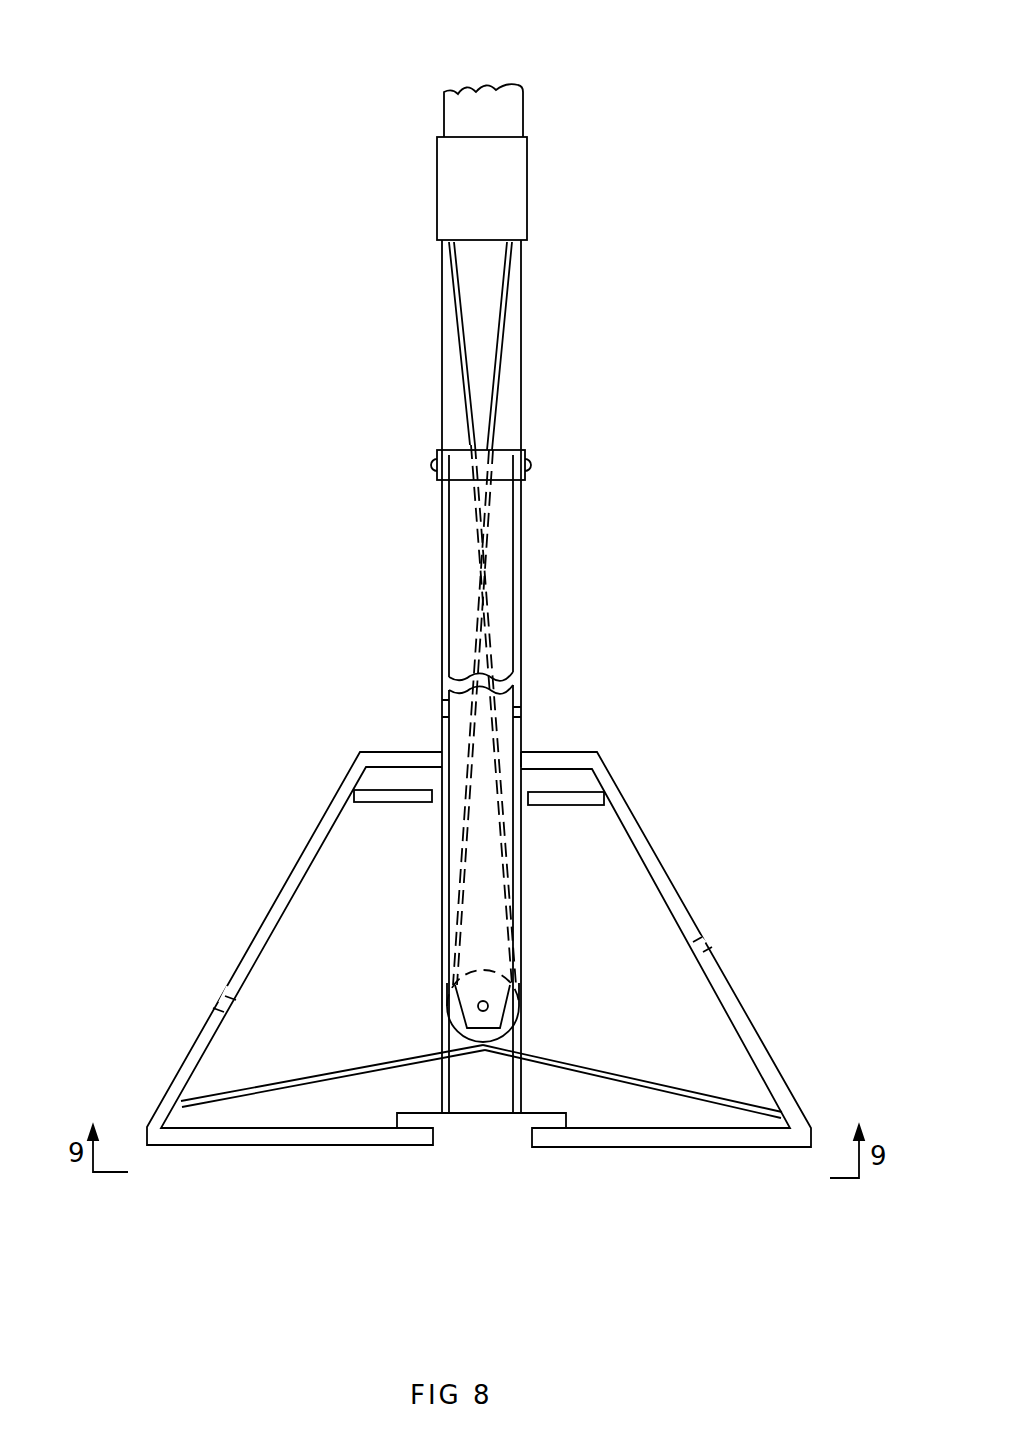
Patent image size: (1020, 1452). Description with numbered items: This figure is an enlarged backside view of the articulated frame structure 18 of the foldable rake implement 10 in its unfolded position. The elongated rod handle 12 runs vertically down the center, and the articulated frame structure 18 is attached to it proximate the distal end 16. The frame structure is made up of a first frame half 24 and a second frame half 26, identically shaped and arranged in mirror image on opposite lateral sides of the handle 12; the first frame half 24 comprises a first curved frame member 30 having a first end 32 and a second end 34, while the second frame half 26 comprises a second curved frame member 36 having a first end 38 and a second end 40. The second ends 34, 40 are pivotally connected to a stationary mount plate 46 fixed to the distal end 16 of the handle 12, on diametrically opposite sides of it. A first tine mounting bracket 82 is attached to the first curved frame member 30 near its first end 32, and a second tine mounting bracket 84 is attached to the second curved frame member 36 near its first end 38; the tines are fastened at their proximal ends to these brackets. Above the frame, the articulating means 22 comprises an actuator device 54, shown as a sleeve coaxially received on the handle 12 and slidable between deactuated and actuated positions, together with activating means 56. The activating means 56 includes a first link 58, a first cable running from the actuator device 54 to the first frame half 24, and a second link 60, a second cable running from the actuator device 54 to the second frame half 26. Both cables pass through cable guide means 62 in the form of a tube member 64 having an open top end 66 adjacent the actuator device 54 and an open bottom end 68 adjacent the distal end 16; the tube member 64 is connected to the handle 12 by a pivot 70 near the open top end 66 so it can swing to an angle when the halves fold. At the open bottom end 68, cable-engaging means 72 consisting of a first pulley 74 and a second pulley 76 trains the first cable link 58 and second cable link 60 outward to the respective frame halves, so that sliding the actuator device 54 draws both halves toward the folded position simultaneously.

The foldable rake implement 10 is at (660, 37).
The elongated rod handle 12 is at (448, 108).
The distal end 16 is at (517, 1098).
The articulated frame structure 18 is at (196, 862).
The articulating means 22 is at (352, 413).
The first frame half 24 is at (675, 852).
The second frame half 26 is at (300, 812).
The first curved frame member 30 is at (718, 957).
The first end 32 is at (531, 748).
The second end 34 is at (542, 1149).
The second curved frame member 36 is at (278, 913).
The first end 38 is at (436, 746).
The second end 40 is at (433, 1150).
The stationary mount plate 46 is at (490, 1122).
The actuator device 54 is at (552, 157).
The activating means 56 is at (637, 508).
The first link 58 is at (508, 293).
The second link 60 is at (450, 265).
The cable guide means 62 is at (562, 497).
The tube member 64 is at (455, 512).
The open top end 66 is at (507, 437).
The open bottom end 68 is at (446, 988).
The pivot 70 is at (531, 461).
The cable-engaging means 72 is at (562, 949).
The first pulley 74 is at (511, 1007).
The second pulley 76 is at (441, 1010).
The first tine mounting bracket 82 is at (583, 804).
The second tine mounting bracket 84 is at (400, 800).